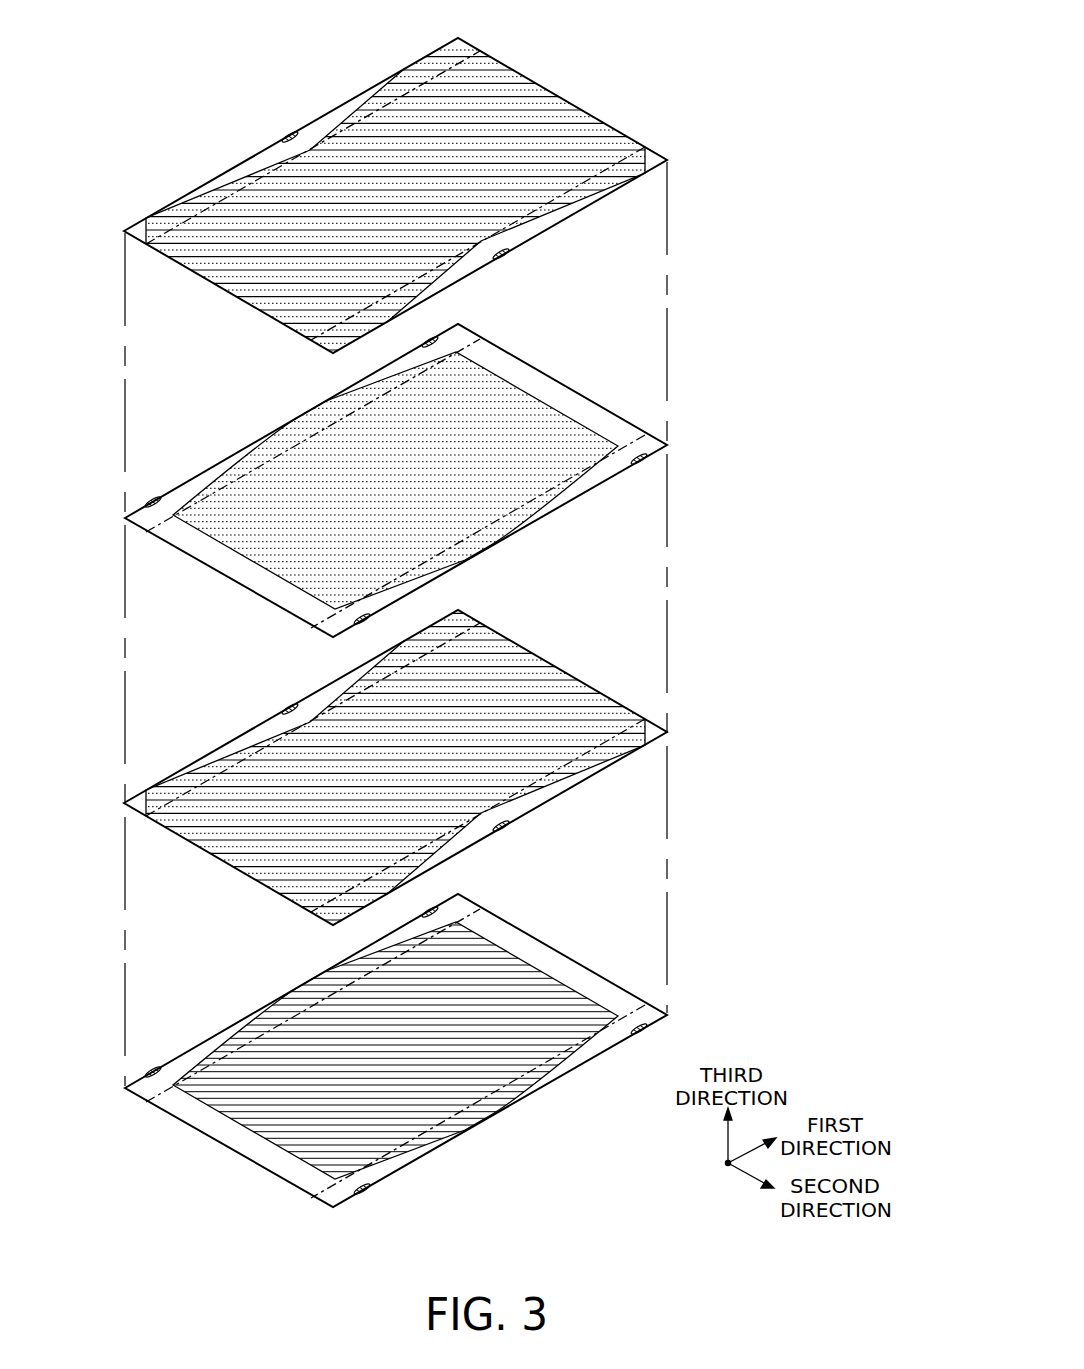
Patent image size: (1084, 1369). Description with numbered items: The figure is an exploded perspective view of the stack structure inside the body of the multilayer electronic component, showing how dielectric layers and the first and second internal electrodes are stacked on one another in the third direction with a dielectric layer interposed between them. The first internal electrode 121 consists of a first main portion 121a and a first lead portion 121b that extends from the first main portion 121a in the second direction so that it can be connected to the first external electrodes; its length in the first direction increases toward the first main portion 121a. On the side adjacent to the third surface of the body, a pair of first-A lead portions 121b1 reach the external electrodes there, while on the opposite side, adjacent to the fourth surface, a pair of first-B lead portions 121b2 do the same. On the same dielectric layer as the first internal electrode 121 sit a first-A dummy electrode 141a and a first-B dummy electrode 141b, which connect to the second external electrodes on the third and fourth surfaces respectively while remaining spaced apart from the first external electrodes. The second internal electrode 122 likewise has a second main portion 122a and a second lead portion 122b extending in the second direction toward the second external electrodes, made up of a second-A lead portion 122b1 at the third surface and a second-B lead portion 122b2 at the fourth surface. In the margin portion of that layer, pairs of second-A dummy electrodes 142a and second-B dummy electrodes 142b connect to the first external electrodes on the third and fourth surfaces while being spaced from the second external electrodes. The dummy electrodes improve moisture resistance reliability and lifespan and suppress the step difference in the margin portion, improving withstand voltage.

The first internal electrode 121 is at (489, 290).
The first main portion 121a is at (257, 274).
The first lead portion 121b is at (489, 290).
The first-A lead portion 121b1 is at (432, 62).
The first-B lead portion 121b2 is at (620, 180).
The first-A dummy electrode 141a is at (287, 134).
The first-B dummy electrode 141b is at (505, 257).
The second internal electrode 122 is at (497, 911).
The second main portion 122a is at (257, 1115).
The second lead portion 122b is at (508, 914).
The second-A lead portion 122b1 is at (295, 991).
The second-B lead portion 122b2 is at (510, 1107).
The second-A dummy electrode 142a is at (436, 908).
The second-B dummy electrode 142b is at (646, 1030).